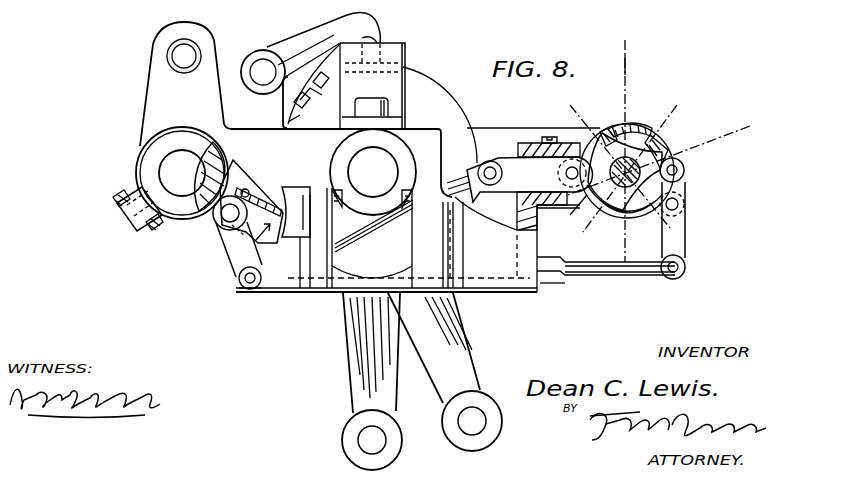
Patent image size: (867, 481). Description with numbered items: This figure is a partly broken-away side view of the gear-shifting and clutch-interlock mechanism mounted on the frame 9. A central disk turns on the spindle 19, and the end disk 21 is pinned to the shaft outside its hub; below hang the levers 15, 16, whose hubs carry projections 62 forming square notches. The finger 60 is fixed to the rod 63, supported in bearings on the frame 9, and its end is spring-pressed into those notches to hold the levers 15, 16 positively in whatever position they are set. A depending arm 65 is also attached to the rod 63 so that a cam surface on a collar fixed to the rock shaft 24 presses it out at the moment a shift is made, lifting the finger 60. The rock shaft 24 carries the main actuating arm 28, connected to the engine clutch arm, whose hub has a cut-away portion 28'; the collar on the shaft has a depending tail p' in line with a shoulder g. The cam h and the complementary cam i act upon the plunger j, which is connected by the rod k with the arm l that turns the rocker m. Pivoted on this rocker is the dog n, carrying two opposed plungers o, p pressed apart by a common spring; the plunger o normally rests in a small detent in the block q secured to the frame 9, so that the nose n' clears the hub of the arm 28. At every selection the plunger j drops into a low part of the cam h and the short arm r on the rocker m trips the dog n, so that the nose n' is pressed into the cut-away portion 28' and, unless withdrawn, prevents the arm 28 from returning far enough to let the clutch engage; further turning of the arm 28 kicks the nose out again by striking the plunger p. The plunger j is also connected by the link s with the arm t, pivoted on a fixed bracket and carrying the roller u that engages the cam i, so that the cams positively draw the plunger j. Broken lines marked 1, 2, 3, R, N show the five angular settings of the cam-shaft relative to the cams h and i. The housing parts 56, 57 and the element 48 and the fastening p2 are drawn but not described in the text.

The arm 28 is at (178, 84).
The cut-away portion 28' is at (206, 155).
The rock shaft 24 is at (170, 163).
The rod 63 is at (262, 60).
The finger 60 is at (308, 36).
The housing 56 is at (382, 34).
The housing chamber 57 is at (392, 92).
The projections 62 is at (310, 76).
The depending arm 65 is at (292, 121).
The end disk 21 is at (450, 105).
The spindle 19 is at (360, 160).
The rod k is at (368, 232).
The depending tail p' is at (124, 211).
The bracket screws p2 is at (115, 194).
The nose n' is at (239, 164).
The plunger p is at (258, 173).
The dog n is at (251, 187).
The plunger o is at (290, 187).
The block q is at (298, 192).
The rocker m is at (226, 218).
The shoulder g is at (226, 240).
The short arm r is at (235, 250).
The arm l is at (239, 283).
The plunger j is at (522, 178).
The cam-shaft angular setting R is at (545, 141).
The cam-shaft angular setting N is at (553, 270).
The cam 48 is at (645, 158).
The cam h is at (604, 130).
The cam i is at (646, 126).
The cam-shaft angular setting 3 is at (631, 55).
The cam-shaft angular setting 2 is at (657, 154).
The roller u is at (685, 170).
The arm t is at (685, 226).
The link s is at (641, 216).
The cam-shaft angular setting 1 is at (688, 260).
The frame 9 is at (490, 293).
The lever 16 is at (352, 358).
The lever 15 is at (436, 391).